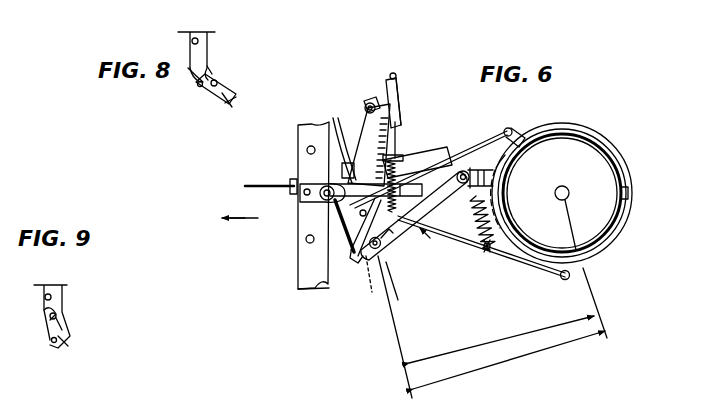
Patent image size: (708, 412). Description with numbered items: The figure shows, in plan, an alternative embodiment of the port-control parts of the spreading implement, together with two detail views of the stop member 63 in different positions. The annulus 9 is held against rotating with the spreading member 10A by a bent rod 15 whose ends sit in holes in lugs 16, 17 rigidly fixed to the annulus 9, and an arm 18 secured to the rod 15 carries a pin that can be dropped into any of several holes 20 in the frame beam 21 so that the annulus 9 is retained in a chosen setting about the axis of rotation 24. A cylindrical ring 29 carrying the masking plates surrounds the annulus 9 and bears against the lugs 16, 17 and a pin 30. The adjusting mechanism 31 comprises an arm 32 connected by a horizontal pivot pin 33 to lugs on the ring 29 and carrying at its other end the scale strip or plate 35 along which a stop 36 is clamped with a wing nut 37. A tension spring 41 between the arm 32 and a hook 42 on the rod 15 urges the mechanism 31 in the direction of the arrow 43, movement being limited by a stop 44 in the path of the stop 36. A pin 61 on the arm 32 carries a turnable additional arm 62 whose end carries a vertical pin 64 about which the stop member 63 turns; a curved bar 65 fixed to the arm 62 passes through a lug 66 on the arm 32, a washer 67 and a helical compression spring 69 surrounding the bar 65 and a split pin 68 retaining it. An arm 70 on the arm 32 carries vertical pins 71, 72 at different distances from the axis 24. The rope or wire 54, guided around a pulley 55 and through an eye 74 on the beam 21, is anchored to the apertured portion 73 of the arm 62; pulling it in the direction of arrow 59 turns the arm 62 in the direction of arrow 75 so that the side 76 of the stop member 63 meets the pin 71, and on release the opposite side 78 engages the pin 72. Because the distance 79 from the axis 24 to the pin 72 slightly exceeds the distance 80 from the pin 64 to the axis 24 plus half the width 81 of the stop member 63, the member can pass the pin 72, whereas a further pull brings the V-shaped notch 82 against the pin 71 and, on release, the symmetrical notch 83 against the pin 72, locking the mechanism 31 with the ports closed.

In FIG. 6, the annulus 9 is at (596, 128).
In FIG. 6, the wheel flange 10A is at (598, 212).
In FIG. 6, the bent rod 15 is at (520, 262).
In FIG. 6, the lug 16 is at (516, 128).
In FIG. 6, the lug 17 is at (570, 277).
In FIG. 6, the arm 18 is at (298, 210).
In FIG. 6, the holes 20 is at (306, 241).
In FIG. 6, the frame beam 21 is at (298, 270).
In FIG. 6, the axis of rotation 24 is at (568, 190).
In FIG. 6, the cylindrical ring 29 is at (614, 150).
In FIG. 6, the pin 30 is at (636, 190).
In FIG. 6, the adjusting mechanism 31 is at (412, 92).
In FIG. 6, the arm 32 is at (452, 156).
In FIG. 6, the horizontal pivot pin 33 is at (482, 168).
In FIG. 6, the strip or plate 35 is at (366, 130).
In FIG. 6, the stop 36 is at (364, 106).
In FIG. 6, the wing nut 37 is at (374, 98).
In FIG. 6, the tension spring 41 is at (472, 212).
In FIG. 6, the hook 42 is at (490, 252).
In FIG. 6, the arrow 43 is at (394, 72).
In FIG. 6, the stop 44 is at (332, 118).
In FIG. 6, the rope or wire 54 is at (262, 184).
In FIG. 6, the pulley 55 is at (307, 152).
In FIG. 6, the arrow 59 is at (248, 222).
In FIG. 6, the pin 61 is at (478, 138).
In FIG. 6, the additional arm 62 is at (432, 228).
In FIG. 6, the stop member 63 is at (388, 270).
In FIG. 9, the vertical pin 64 is at (58, 317).
In FIG. 6, the vertical pin 64 is at (382, 248).
In FIG. 6, the curved bar 65 is at (402, 124).
In FIG. 6, the lug 66 is at (398, 150).
In FIG. 6, the washer 67 is at (390, 231).
In FIG. 6, the split pin 68 is at (428, 78).
In FIG. 6, the helical compression spring 69 is at (416, 160).
In FIG. 8, the arm 70 is at (212, 53).
In FIG. 9, the arm 70 is at (63, 300).
In FIG. 6, the arm 70 is at (355, 228).
In FIG. 8, the vertical pin 71 is at (197, 37).
In FIG. 9, the vertical pin 71 is at (52, 292).
In FIG. 6, the vertical pin 71 is at (358, 214).
In FIG. 8, the vertical pin 72 is at (197, 86).
In FIG. 9, the vertical pin 72 is at (52, 344).
In FIG. 6, the vertical pin 72 is at (369, 282).
In FIG. 6, the apertured portion 73 is at (353, 263).
In FIG. 6, the eye 74 is at (290, 192).
In FIG. 6, the arrow 75 is at (428, 240).
In FIG. 8, the side 76 is at (213, 76).
In FIG. 8, the side 78 is at (213, 98).
In FIG. 6, the distance 79 is at (470, 374).
In FIG. 6, the distance 80 is at (493, 340).
In FIG. 8, the width 81 is at (232, 102).
In FIG. 8, the V-shaped notch 82 is at (190, 68).
In FIG. 9, the V-shaped notch 82 is at (46, 310).
In FIG. 8, the V-shaped notch 83 is at (222, 84).
In FIG. 9, the V-shaped notch 83 is at (72, 338).